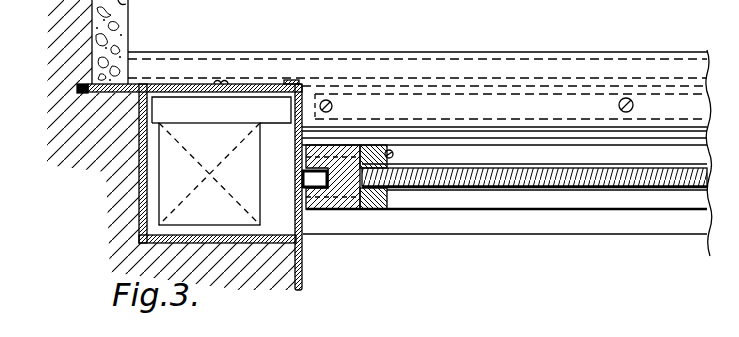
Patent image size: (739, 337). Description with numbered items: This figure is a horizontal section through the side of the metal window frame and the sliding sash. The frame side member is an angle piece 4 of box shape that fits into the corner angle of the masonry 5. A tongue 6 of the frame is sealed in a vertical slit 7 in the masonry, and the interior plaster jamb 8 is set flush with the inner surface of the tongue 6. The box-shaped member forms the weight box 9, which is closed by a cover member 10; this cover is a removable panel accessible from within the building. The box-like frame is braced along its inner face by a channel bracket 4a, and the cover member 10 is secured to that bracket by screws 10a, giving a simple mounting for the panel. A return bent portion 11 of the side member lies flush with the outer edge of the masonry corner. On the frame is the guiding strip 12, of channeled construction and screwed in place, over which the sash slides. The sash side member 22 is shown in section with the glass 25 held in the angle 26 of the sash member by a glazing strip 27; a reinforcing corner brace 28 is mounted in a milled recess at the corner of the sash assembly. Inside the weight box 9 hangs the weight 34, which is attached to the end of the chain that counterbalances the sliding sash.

The angle piece 4 is at (140, 238).
The channel bracket 4a is at (258, 97).
The masonry 5 is at (113, 220).
The tongue 6 is at (90, 93).
The vertical slit 7 is at (79, 87).
The interior plaster jamb 8 is at (115, 33).
The weight box 9 is at (138, 161).
The cover member 10 is at (198, 88).
The screw 10a is at (227, 84).
The return bent portion 11 is at (303, 276).
The guiding strip 12 is at (330, 188).
The sash side member 22 is at (373, 190).
The glass 25 is at (510, 190).
The angle 26 is at (343, 196).
The glazing strip 27 is at (396, 166).
The reinforcing corner brace 28 is at (320, 197).
The weight 34 is at (248, 143).